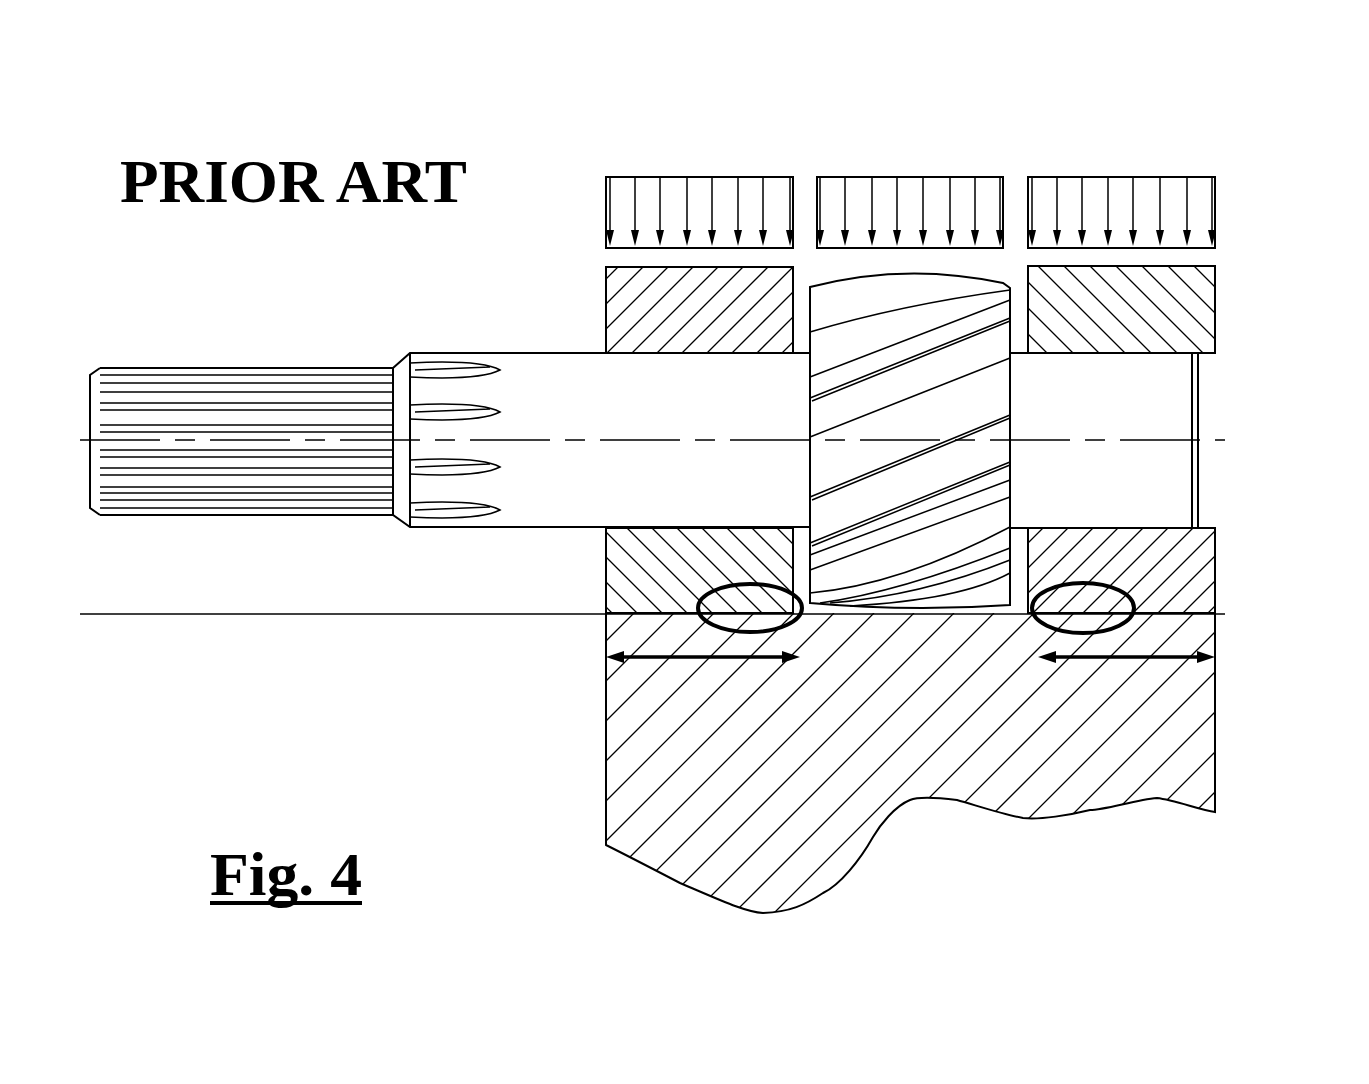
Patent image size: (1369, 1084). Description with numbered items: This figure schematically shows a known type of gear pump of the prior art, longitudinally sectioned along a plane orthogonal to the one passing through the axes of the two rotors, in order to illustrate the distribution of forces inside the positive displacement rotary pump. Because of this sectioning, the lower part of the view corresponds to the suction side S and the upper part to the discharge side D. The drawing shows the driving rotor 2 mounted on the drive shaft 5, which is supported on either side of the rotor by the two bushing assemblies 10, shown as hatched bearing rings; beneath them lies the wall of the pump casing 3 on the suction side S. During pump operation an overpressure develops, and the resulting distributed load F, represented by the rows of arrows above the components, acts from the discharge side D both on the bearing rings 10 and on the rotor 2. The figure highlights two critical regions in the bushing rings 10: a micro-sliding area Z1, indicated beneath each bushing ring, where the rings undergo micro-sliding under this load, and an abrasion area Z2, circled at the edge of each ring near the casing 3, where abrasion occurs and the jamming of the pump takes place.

The bushing assemblies 10 is at (630, 300).
The distributed load F is at (917, 190).
The driving rotor 2 is at (943, 360).
The drive shaft 5 is at (1168, 397).
The pump casing 3 is at (1103, 753).
The discharge side D is at (580, 253).
The suction side S is at (580, 598).
The micro-sliding area Z1 is at (910, 691).
The abrasion area Z2 is at (909, 583).